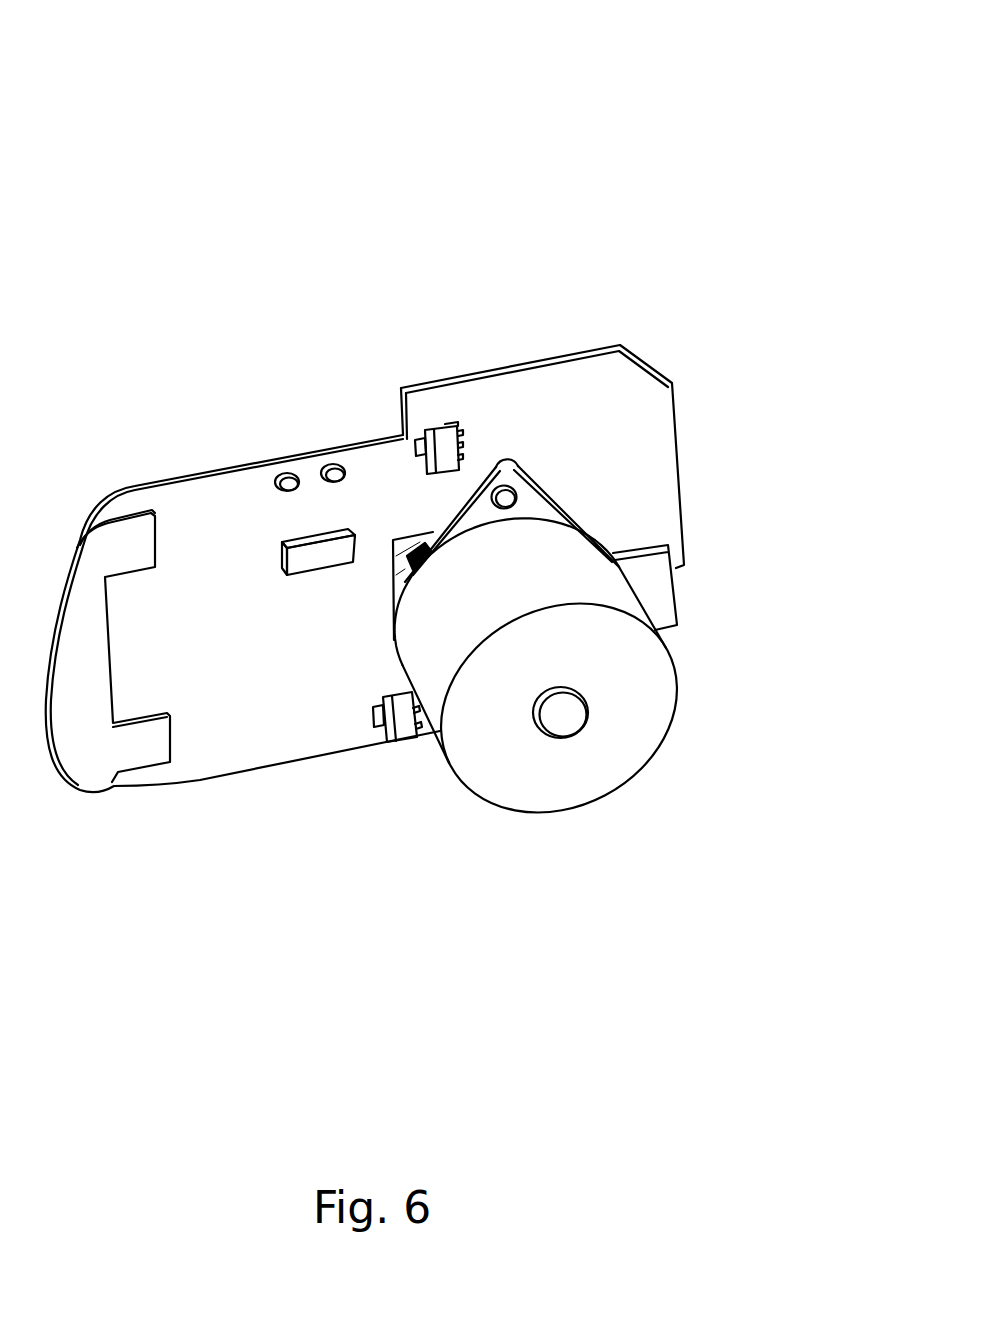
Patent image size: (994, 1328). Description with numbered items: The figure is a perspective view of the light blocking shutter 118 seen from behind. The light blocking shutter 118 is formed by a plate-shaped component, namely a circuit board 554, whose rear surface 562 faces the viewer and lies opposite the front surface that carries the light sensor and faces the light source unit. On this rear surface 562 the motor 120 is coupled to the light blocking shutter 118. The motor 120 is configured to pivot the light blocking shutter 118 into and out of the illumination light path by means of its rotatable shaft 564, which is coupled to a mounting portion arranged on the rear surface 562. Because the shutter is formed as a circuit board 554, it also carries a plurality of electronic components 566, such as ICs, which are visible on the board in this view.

The light blocking shutter 118 is at (641, 60).
The motor 120 is at (610, 727).
The circuit board 554 is at (232, 718).
The rear surface 562 is at (620, 500).
The rotatable shaft 564 is at (563, 722).
The electronic components 566 is at (405, 720).